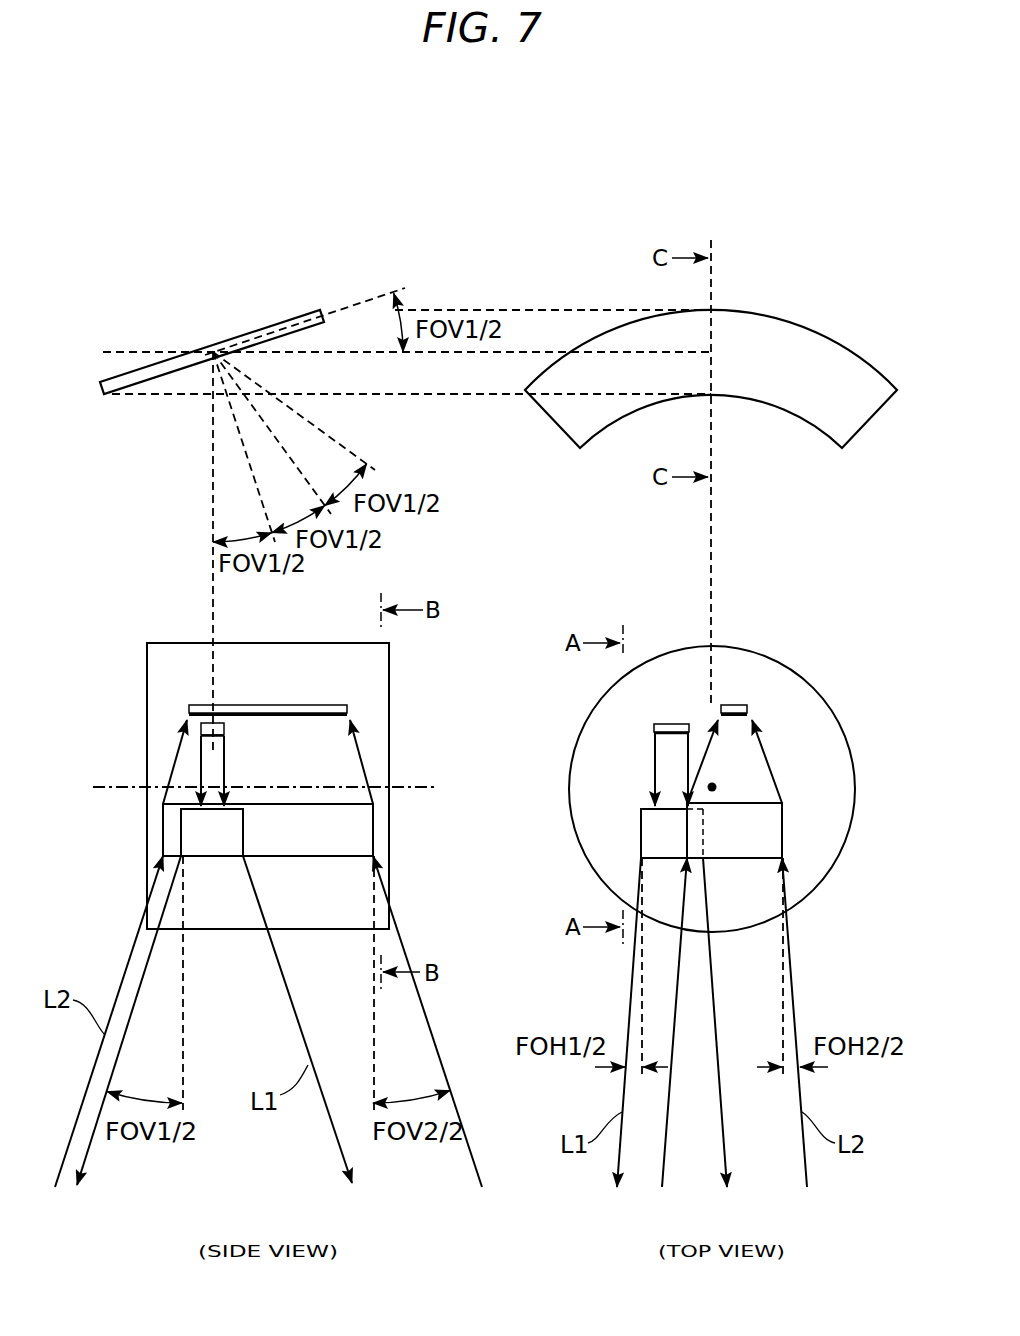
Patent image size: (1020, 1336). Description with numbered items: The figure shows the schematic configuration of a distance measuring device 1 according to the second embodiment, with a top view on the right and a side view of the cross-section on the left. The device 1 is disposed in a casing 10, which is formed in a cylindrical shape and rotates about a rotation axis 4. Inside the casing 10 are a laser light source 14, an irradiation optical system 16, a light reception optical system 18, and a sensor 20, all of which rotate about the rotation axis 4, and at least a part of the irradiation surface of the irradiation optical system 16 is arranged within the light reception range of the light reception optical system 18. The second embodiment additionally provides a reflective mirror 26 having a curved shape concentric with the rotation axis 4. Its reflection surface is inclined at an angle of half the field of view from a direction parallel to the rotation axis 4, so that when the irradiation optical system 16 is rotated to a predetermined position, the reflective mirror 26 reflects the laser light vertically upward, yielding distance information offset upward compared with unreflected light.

The distance measuring device 1 is at (767, 167).
The rotation axis 4 is at (415, 783).
The casing 10 is at (402, 704).
The laser light source 14 is at (224, 729).
The irradiation optical system 16 is at (214, 845).
The light reception optical system 18 is at (314, 845).
The sensor 20 is at (260, 708).
The reflective mirror 26 is at (246, 332).